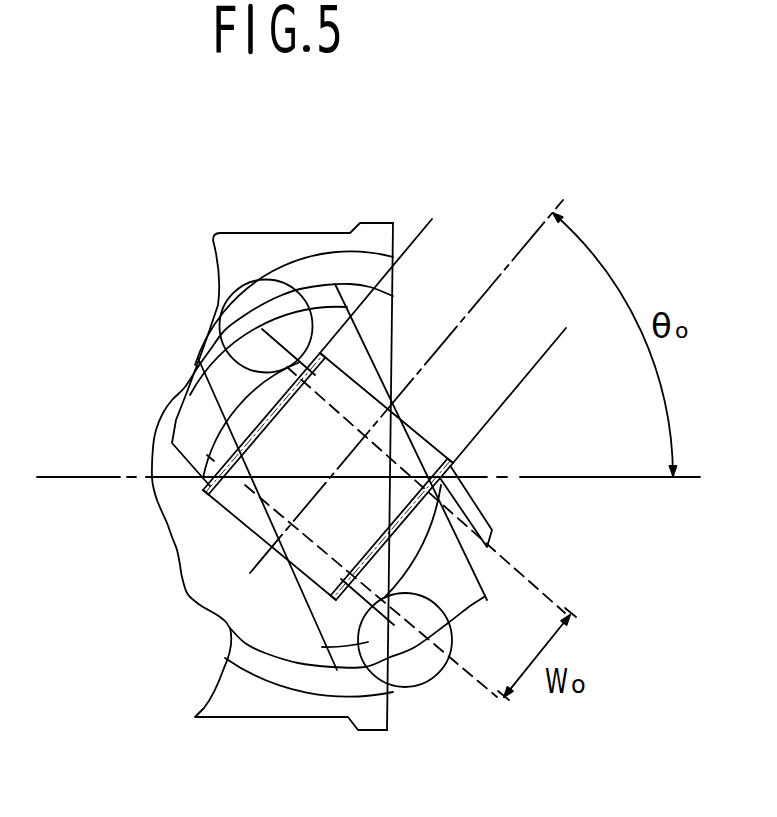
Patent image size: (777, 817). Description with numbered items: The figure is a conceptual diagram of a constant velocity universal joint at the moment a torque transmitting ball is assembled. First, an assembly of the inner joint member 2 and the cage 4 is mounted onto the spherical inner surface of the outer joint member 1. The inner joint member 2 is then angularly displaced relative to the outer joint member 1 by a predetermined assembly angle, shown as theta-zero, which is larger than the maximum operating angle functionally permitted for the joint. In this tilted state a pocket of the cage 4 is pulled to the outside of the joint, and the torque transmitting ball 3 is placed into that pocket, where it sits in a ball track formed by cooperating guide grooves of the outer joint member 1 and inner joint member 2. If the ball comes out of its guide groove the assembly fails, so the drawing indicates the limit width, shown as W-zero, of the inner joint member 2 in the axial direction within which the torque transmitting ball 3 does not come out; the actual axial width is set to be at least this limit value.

The outer joint member 1 is at (157, 149).
The inner joint member 2 is at (483, 517).
The torque transmitting ball 3 is at (427, 688).
The cage 4 is at (485, 592).